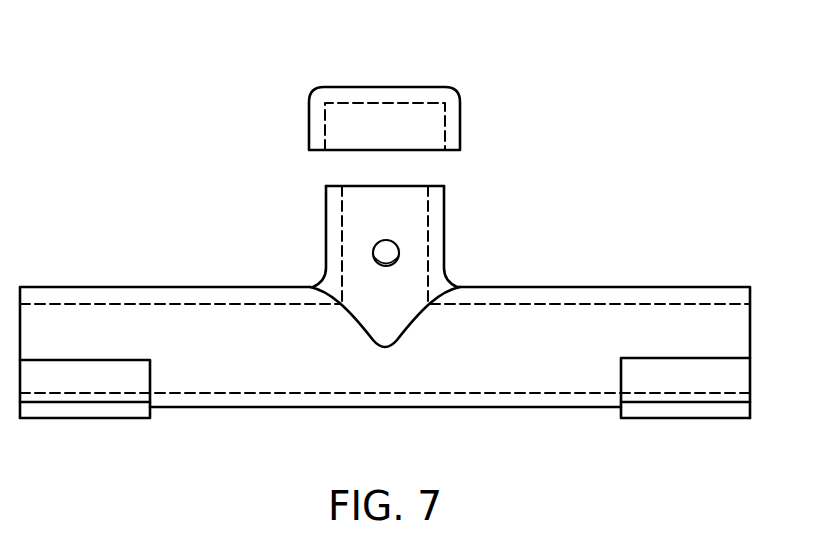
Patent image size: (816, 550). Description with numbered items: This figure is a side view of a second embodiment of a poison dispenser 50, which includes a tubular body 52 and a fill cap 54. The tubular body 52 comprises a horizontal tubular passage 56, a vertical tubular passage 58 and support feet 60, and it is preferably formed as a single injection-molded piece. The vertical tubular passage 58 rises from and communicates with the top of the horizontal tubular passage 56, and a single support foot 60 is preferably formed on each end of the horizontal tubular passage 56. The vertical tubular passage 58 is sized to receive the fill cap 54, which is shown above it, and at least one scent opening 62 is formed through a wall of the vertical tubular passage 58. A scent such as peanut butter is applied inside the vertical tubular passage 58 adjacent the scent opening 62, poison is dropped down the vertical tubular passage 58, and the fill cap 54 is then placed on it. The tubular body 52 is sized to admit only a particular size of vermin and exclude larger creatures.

The poison dispenser 50 is at (552, 143).
The tubular body 52 is at (233, 282).
The fill cap 54 is at (417, 93).
The horizontal tubular passage 56 is at (659, 285).
The vertical tubular passage 58 is at (444, 215).
The support foot 60 is at (70, 412).
The scent opening 62 is at (373, 248).